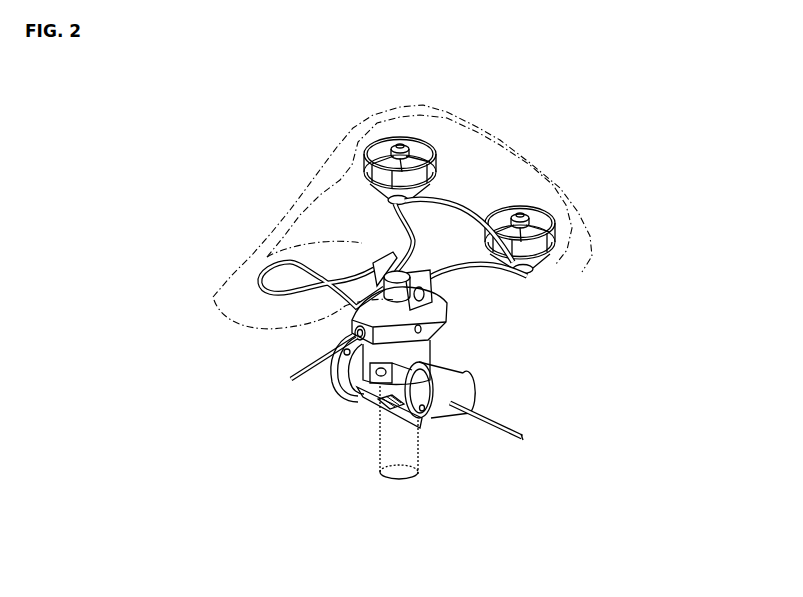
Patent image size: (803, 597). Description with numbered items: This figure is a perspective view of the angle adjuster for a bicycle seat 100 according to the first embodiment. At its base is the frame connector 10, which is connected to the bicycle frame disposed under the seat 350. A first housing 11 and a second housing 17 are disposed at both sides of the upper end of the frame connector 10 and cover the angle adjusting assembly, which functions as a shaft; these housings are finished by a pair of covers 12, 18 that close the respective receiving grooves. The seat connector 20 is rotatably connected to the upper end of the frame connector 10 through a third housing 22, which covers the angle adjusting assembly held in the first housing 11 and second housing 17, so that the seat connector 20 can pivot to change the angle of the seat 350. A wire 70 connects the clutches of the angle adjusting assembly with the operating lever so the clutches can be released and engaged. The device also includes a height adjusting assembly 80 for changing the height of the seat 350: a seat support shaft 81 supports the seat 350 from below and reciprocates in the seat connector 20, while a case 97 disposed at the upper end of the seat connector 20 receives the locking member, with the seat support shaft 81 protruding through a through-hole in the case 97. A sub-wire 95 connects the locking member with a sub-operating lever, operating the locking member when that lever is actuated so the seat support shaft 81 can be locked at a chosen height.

The seat 350 is at (468, 156).
The seat support shaft 81 is at (396, 252).
The case 97 is at (436, 296).
The height adjusting assembly 80 is at (452, 327).
The seat connector 20 is at (430, 352).
The sub-wire 95 is at (306, 364).
The cover 12 is at (340, 364).
The first housing 11 is at (370, 384).
The cover 18 is at (456, 395).
The wire 70 is at (504, 434).
The third housing 22 is at (378, 412).
The second housing 17 is at (386, 430).
The frame connector 10 is at (416, 446).
The angle adjuster for a bicycle seat 100 is at (561, 296).